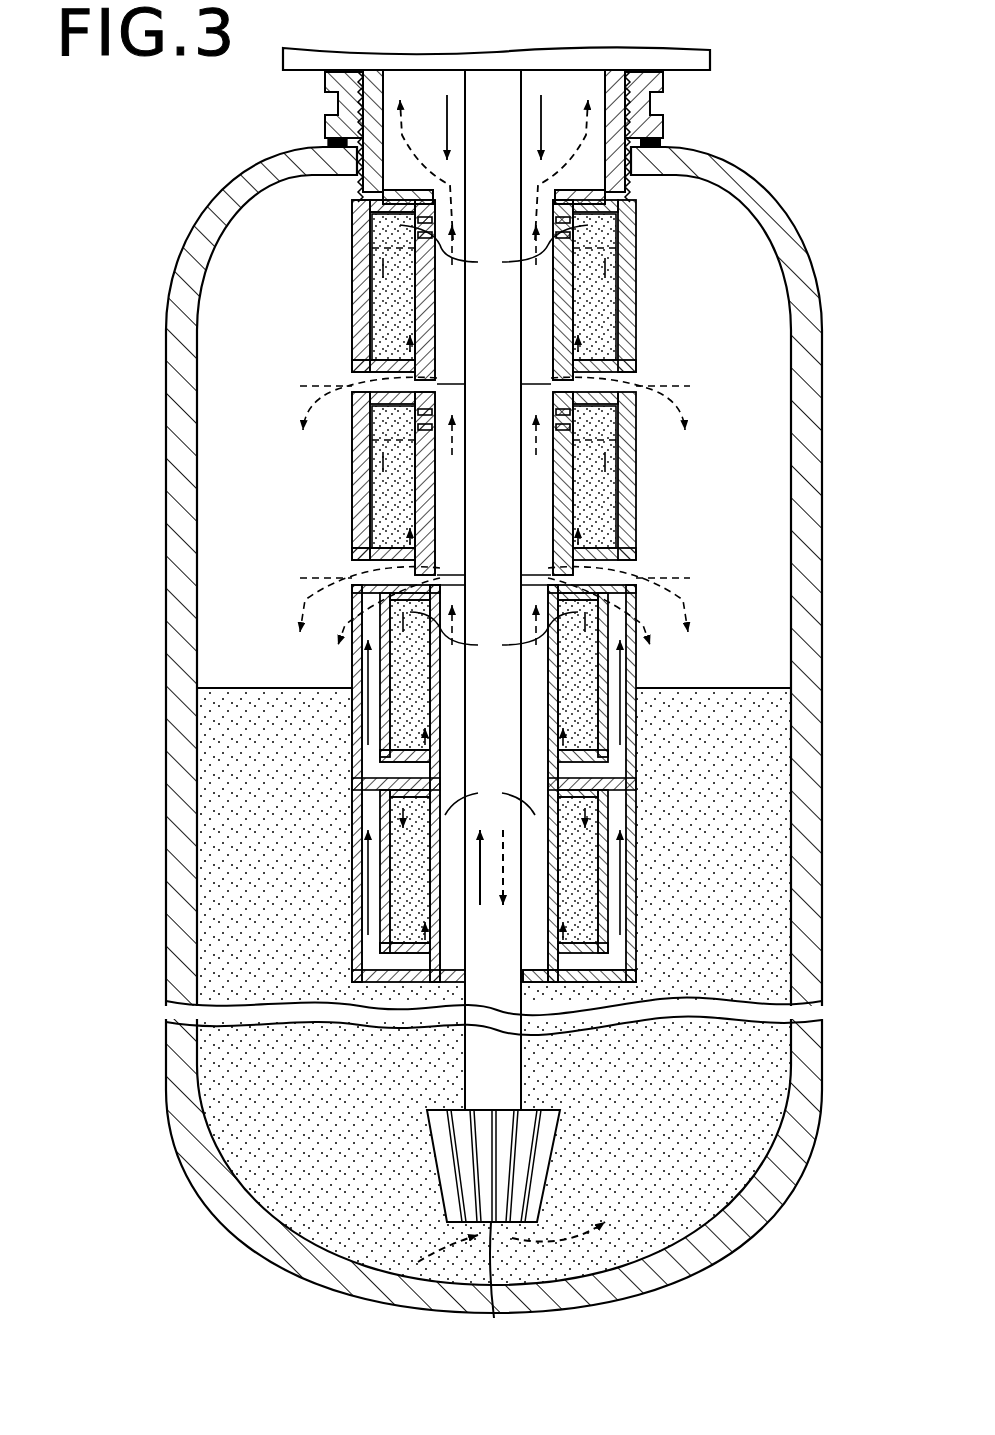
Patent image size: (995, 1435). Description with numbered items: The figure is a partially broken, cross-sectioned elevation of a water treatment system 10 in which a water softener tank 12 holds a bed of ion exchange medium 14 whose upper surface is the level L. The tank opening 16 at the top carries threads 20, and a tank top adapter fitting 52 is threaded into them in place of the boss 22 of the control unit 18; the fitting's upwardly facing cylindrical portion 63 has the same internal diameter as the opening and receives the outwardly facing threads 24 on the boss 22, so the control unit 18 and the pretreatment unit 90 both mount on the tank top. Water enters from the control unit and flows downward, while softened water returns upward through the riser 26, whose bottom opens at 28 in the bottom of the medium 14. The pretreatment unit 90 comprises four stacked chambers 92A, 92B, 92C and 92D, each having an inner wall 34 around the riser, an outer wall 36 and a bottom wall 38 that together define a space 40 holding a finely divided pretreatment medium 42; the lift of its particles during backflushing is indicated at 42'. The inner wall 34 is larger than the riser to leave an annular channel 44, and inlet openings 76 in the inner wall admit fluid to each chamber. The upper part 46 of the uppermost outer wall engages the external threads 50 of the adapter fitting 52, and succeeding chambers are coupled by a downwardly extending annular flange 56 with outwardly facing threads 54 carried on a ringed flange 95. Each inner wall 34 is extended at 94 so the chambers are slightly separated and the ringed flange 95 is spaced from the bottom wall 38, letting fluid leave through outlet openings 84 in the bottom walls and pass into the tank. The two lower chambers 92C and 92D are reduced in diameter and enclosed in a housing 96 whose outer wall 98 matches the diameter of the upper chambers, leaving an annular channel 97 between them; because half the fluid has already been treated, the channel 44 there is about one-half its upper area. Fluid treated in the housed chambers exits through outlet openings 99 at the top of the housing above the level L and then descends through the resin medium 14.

The water treatment system 10 is at (785, 192).
The water softener tank 12 is at (815, 462).
The ion exchange medium 14 is at (672, 1093).
The tank top opening 16 is at (357, 180).
The control unit 18 is at (712, 58).
The threads 20 is at (340, 142).
The boss 22 is at (385, 104).
The outwardly facing threads 24 is at (665, 104).
The riser 26 is at (474, 1080).
The riser bottom opening 28 is at (511, 1284).
The inner wall 34 is at (435, 332).
The outer wall 36 is at (352, 318).
The bottom wall 38 is at (365, 356).
The space 40 is at (378, 290).
The pretreatment water treatment medium 42 is at (637, 578).
The lifted medium particles 42' is at (634, 232).
The annular channel 44 is at (552, 558).
The upper part of outer wall 46 is at (365, 210).
The external threads 50 is at (368, 238).
The tank top adapter fitting 52 is at (690, 136).
The outwardly facing threads 54 is at (640, 392).
The downwardly extending annular flange 56 is at (378, 256).
The upwardly facing cylindrical portion 63 is at (325, 86).
The inlet openings 76 is at (494, 520).
The outlet openings 84 is at (440, 384).
The pretreatment unit 90 is at (660, 352).
The first chamber 92A is at (640, 268).
The second chamber 92B is at (638, 520).
The third chamber 92C is at (632, 730).
The fourth chamber 92D is at (636, 890).
The inner wall extension 94 is at (420, 380).
The ringed flange 95 is at (375, 380).
The housing 96 is at (655, 770).
The annular channel 97 is at (630, 842).
The housing outer wall 98 is at (645, 948).
The housing outlet openings 99 is at (598, 612).
The resin level L is at (246, 688).